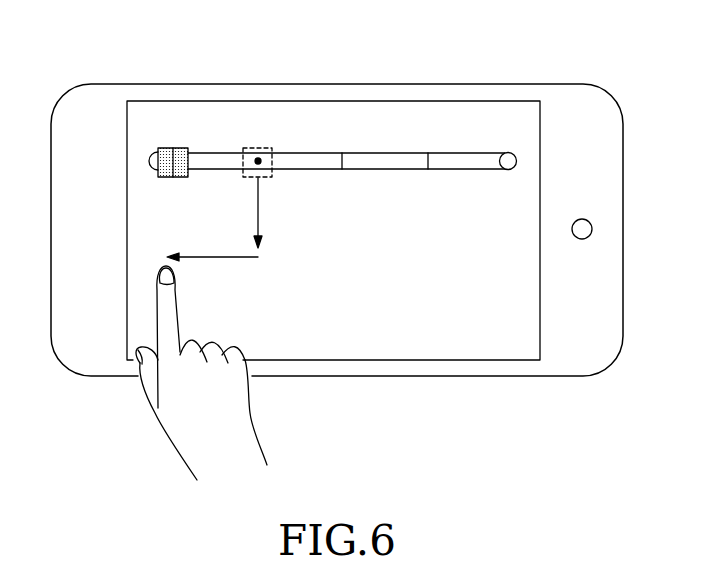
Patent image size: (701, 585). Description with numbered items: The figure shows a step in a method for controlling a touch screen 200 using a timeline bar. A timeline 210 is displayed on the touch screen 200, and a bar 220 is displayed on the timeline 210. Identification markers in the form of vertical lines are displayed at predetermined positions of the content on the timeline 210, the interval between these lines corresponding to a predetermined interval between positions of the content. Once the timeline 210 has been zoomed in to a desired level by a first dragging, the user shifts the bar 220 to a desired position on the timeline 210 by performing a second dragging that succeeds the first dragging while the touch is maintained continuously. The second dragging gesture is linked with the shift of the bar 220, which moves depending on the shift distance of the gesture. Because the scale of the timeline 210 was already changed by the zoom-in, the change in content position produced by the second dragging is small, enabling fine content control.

The touch screen 200 is at (462, 118).
The timeline 210 is at (373, 170).
The bar 220 is at (243, 172).